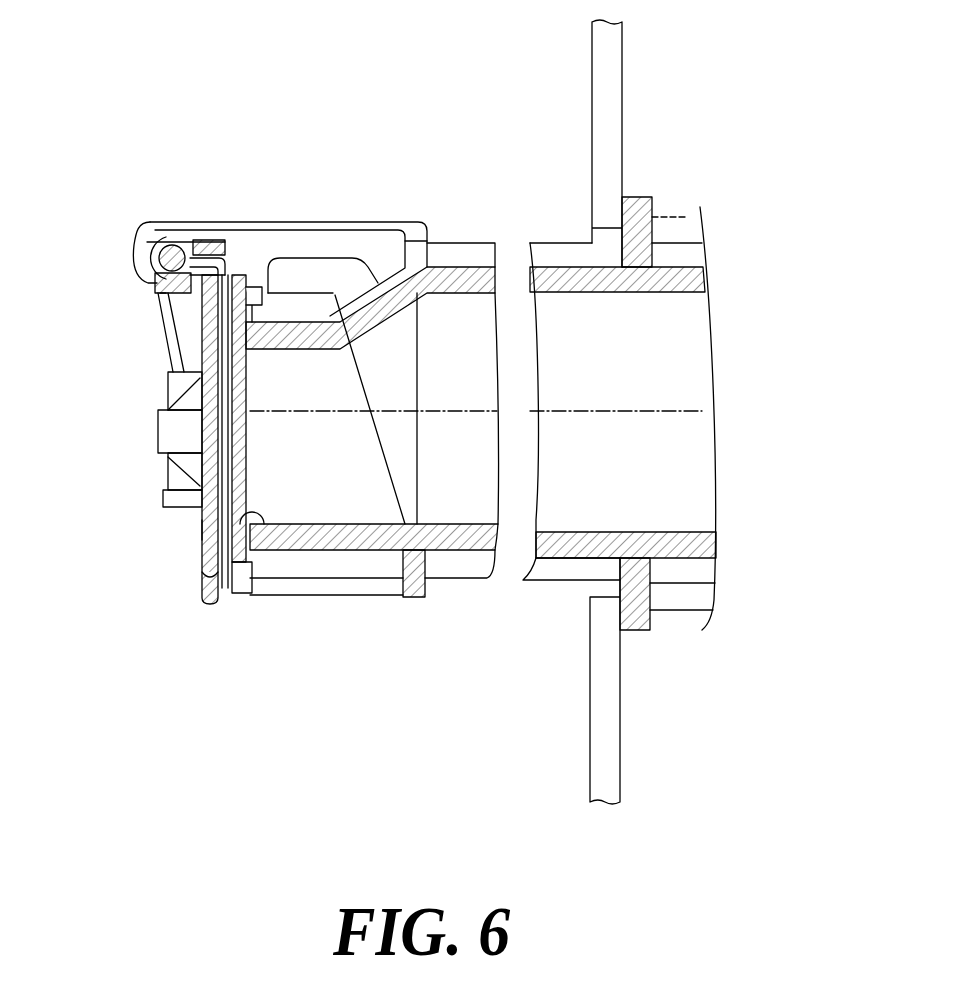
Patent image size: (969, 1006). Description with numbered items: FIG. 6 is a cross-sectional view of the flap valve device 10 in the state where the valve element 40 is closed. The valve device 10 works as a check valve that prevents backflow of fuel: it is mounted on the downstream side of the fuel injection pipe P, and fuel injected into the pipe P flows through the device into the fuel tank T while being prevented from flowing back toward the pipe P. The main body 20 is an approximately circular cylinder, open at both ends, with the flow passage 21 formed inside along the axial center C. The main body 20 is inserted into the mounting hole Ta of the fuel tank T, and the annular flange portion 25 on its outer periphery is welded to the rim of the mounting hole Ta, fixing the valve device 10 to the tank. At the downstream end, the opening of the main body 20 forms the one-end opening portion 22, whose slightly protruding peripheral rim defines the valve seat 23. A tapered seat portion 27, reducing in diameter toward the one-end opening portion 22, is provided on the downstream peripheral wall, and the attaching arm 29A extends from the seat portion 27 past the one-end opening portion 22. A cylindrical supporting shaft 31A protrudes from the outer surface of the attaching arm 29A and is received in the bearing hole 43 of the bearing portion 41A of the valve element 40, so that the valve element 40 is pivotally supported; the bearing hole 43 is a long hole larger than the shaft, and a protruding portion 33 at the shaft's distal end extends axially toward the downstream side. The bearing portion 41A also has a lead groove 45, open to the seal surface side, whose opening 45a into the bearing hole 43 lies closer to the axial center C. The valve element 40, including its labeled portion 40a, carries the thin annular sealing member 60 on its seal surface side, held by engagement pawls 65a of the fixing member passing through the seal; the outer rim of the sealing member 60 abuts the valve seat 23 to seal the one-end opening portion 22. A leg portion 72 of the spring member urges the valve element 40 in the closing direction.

The flap valve device 10 is at (462, 206).
The main body 20 is at (540, 594).
The flow passage 21 is at (446, 375).
The one-end opening portion 22 is at (258, 514).
The valve seat 23 is at (247, 568).
The flange portion 25 is at (640, 632).
The seat portion 27 is at (297, 297).
The attaching arm 29A is at (344, 224).
The supporting shaft 31A is at (176, 248).
The protruding portion 33 is at (159, 262).
The valve element 40 is at (183, 560).
The plate surface 40a is at (200, 530).
The bearing portion 41A is at (138, 252).
The bearing hole 43 is at (158, 278).
The lead groove 45 is at (172, 362).
The opening 45a is at (160, 300).
The sealing member 60 is at (226, 592).
The engagement pawl 65a is at (168, 478).
The leg portion 72 is at (168, 382).
The fuel tank T is at (626, 95).
The mounting hole Ta is at (600, 228).
The fuel injection pipe P is at (685, 216).
The axial center C is at (700, 410).